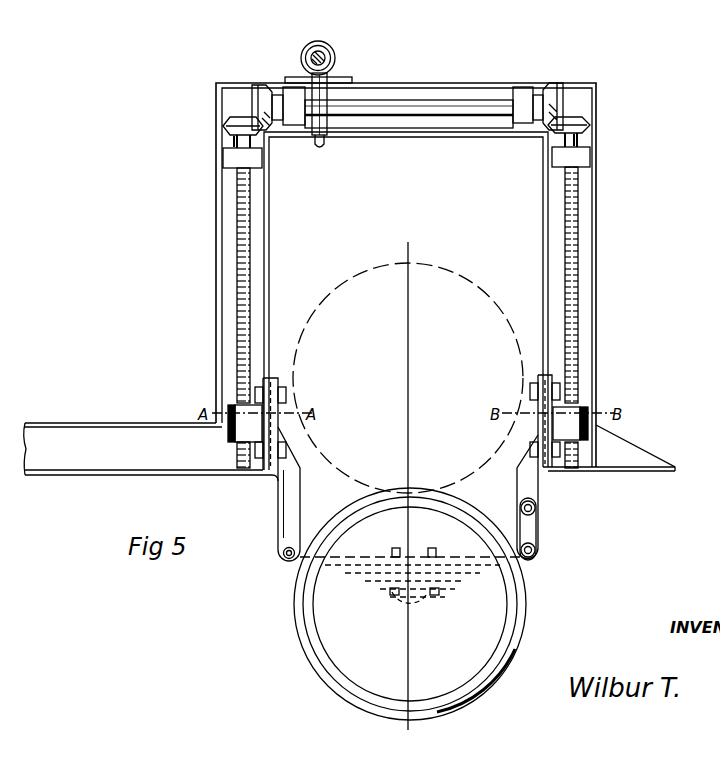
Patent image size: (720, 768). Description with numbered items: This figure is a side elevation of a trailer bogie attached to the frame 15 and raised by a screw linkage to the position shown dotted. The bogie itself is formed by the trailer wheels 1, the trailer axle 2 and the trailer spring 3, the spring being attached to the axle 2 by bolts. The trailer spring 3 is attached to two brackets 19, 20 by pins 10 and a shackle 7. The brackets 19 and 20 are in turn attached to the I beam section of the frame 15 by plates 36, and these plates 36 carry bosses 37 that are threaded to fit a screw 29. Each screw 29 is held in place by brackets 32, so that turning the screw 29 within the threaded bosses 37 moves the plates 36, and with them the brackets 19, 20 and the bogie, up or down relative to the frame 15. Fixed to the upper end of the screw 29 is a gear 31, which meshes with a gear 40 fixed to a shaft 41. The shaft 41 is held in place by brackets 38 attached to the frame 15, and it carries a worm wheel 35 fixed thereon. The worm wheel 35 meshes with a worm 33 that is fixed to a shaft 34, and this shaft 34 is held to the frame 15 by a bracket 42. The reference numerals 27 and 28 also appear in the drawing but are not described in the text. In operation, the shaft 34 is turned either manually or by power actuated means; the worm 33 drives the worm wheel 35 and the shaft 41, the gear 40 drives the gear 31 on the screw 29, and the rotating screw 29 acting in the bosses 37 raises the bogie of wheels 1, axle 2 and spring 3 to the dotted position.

The trailer wheels 1 is at (517, 632).
The trailer axle 2 is at (417, 613).
The trailer spring 3 is at (460, 576).
The shackle 7 is at (530, 530).
The pins 10 is at (283, 556).
The frame 15 is at (422, 83).
The bracket 19 is at (292, 490).
The bracket 20 is at (523, 474).
The nut 27 is at (284, 393).
The gusset bracket 28 is at (650, 462).
The screw 29 is at (254, 330).
The gear 31 is at (230, 128).
The brackets 32 is at (225, 160).
The worm 33 is at (335, 62).
The shaft 34 is at (321, 51).
The worm wheel 35 is at (322, 150).
The plates 36 is at (268, 385).
The bosses 37 is at (233, 460).
The brackets 38 is at (292, 92).
The gear 40 is at (262, 97).
The shaft 41 is at (412, 118).
The bracket 42 is at (347, 80).